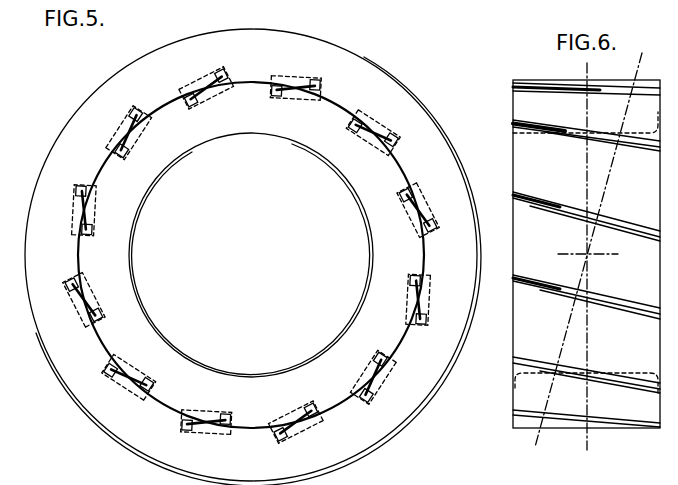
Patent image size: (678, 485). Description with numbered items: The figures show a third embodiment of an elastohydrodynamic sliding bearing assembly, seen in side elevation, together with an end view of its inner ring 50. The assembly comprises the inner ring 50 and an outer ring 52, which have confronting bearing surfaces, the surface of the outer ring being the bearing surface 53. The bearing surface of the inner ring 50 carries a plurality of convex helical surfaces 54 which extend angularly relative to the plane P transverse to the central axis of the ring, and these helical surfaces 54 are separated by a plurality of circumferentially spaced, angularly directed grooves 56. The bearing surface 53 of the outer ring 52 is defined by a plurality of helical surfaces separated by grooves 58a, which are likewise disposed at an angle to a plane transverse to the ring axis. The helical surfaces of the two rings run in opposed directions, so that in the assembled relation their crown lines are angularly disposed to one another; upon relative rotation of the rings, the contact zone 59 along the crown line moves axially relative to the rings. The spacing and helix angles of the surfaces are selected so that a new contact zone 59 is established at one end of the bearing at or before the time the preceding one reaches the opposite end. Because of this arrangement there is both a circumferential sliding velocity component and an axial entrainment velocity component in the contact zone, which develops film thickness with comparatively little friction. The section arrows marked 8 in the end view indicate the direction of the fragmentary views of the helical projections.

In FIG. 5, the inner ring 50 is at (152, 180).
In FIG. 6, the inner ring 50 is at (511, 91).
In FIG. 5, the outer ring 52 is at (100, 91).
In FIG. 6, the outer ring 52 is at (677, 16).
In FIG. 5, the bearing surface 53 is at (288, 88).
In FIG. 6, the convex helical surfaces 54 is at (518, 148).
In FIG. 5, the grooves 56 is at (356, 128).
In FIG. 5, the grooves 58a is at (320, 95).
In FIG. 5, the contact zone 59 is at (390, 160).
In FIG. 6, the section line 8- 8 is at (636, 198).
In FIG. 6, the plane P is at (585, 66).